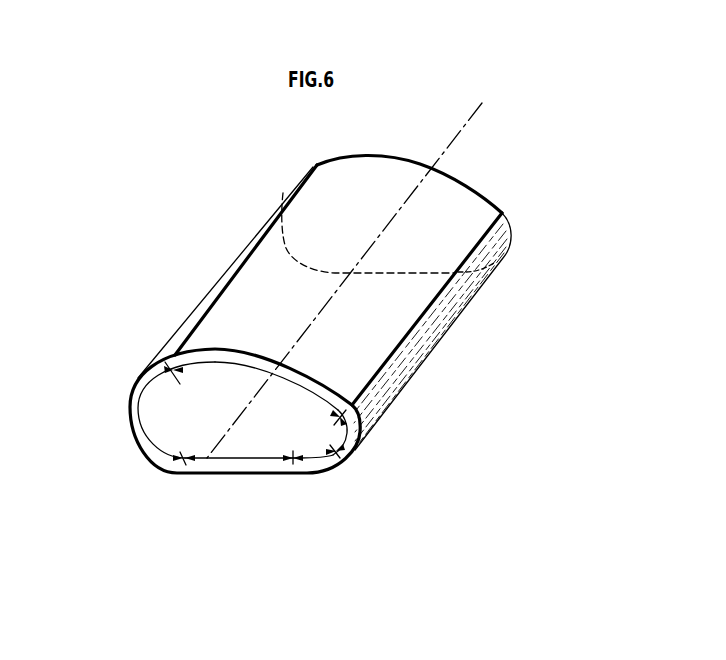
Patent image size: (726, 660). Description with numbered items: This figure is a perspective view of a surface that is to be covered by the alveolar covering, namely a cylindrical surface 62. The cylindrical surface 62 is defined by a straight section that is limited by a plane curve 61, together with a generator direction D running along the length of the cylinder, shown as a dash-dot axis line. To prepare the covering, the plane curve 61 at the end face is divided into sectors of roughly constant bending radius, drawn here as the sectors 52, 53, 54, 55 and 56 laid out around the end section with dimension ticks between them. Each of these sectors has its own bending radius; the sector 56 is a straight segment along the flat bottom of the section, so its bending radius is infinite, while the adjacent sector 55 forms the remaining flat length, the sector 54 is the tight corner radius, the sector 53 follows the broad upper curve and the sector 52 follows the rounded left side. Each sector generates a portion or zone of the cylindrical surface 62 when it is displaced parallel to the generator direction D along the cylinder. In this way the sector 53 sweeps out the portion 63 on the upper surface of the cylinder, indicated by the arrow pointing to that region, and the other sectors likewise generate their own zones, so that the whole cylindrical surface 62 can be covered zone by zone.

The sector 52 is at (174, 413).
The sector 53 is at (259, 393).
The sector 54 is at (341, 434).
The sector 55 is at (314, 455).
The sector 56 is at (239, 456).
The plane curve 61 is at (243, 473).
The cylindrical surface 62 is at (479, 358).
The portion 63 is at (446, 200).
The generator direction D is at (473, 116).